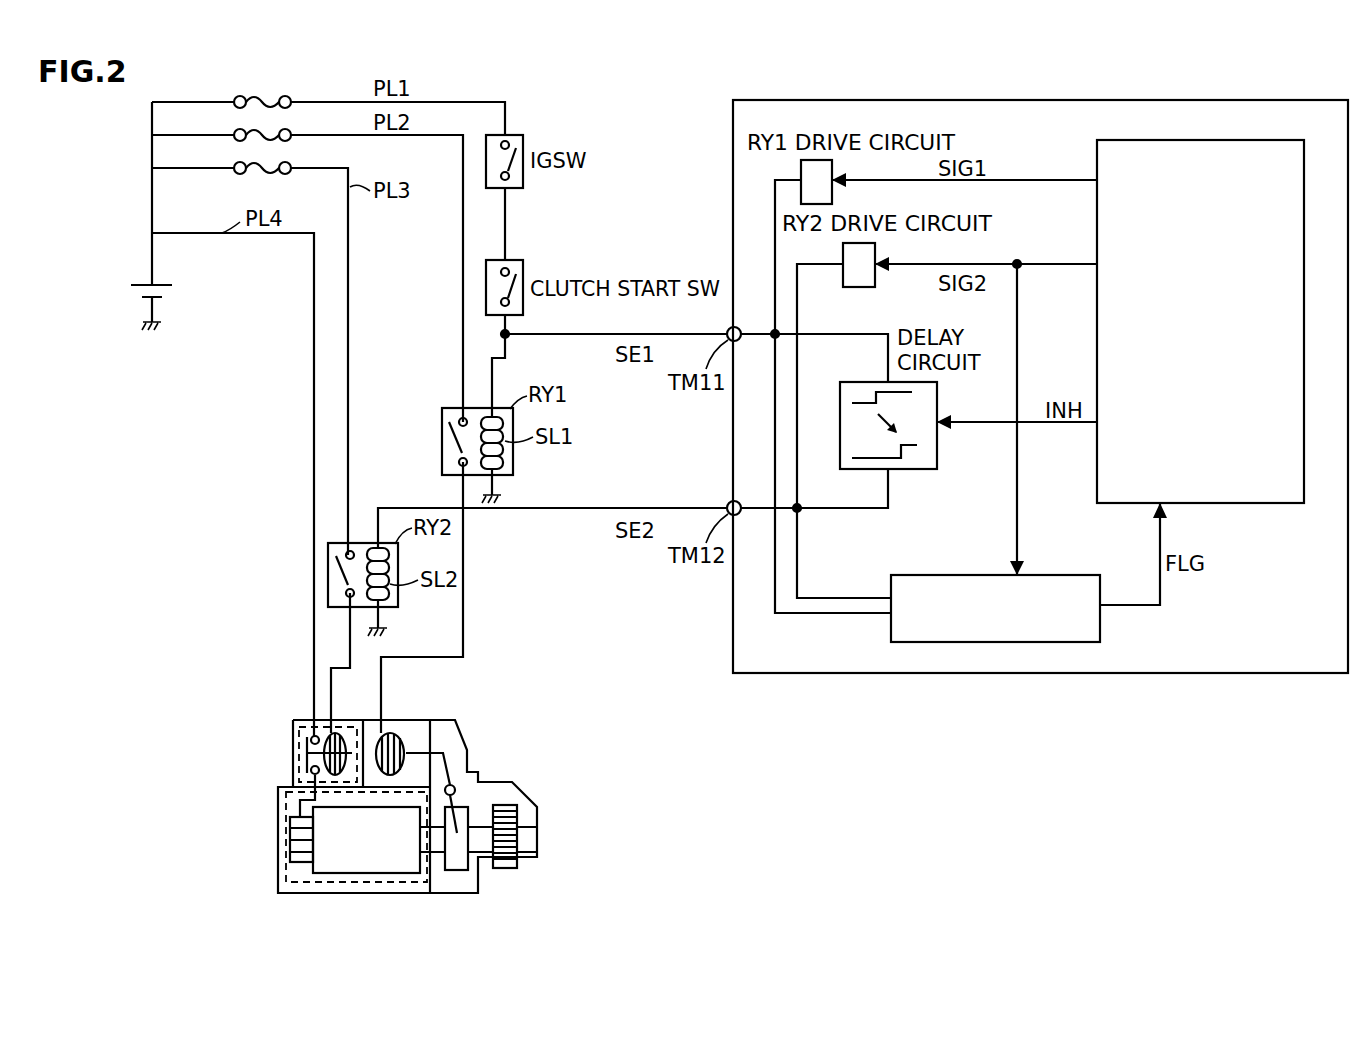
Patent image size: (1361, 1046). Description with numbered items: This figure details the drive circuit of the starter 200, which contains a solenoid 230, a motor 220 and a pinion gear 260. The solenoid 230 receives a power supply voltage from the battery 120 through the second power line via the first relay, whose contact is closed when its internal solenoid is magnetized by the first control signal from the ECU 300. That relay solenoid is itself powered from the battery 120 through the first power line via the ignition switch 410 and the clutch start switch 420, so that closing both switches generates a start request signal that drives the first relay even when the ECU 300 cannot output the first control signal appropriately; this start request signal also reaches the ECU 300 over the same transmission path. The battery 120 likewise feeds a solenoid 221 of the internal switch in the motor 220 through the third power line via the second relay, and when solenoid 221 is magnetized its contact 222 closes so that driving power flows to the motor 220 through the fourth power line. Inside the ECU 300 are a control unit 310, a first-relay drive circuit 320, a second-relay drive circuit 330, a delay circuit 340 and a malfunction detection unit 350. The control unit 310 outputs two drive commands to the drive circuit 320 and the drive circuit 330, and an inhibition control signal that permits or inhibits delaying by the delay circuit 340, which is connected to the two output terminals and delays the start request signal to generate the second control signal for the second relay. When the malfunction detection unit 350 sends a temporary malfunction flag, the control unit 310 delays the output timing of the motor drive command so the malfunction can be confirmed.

The battery 120 is at (133, 284).
The starter 200 is at (465, 733).
The motor 220 is at (290, 803).
The solenoid 221 is at (322, 748).
The contact 222 is at (303, 768).
The solenoid 230 is at (400, 722).
The pinion gear 260 is at (510, 869).
The ECU 300 is at (1283, 98).
The control unit 310 is at (1158, 140).
The RY1 drive circuit 320 is at (834, 170).
The RY2 drive circuit 330 is at (877, 253).
The delay circuit 340 is at (919, 470).
The malfunction detection unit 350 is at (1073, 643).
The IGSW 410 is at (523, 136).
The clutch start switch 420 is at (523, 262).